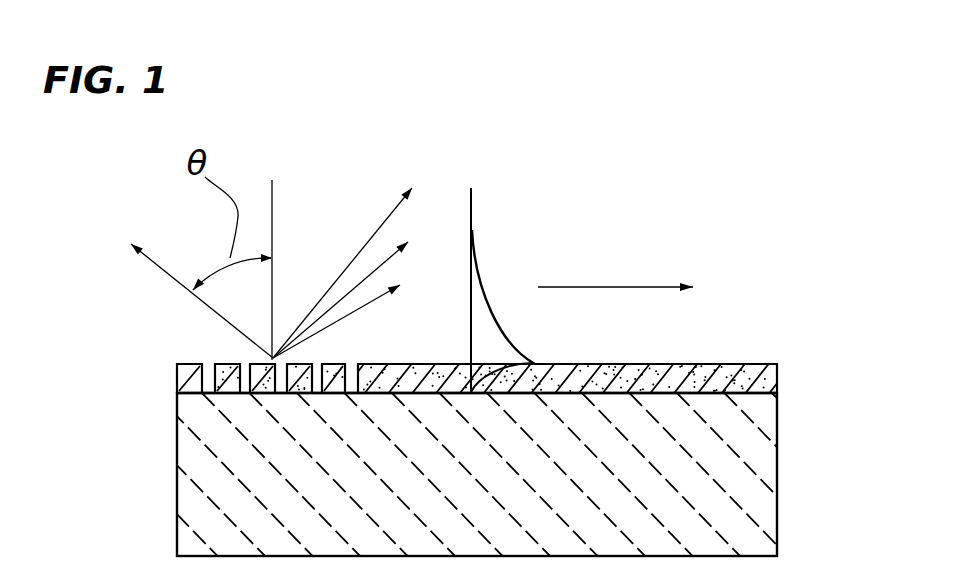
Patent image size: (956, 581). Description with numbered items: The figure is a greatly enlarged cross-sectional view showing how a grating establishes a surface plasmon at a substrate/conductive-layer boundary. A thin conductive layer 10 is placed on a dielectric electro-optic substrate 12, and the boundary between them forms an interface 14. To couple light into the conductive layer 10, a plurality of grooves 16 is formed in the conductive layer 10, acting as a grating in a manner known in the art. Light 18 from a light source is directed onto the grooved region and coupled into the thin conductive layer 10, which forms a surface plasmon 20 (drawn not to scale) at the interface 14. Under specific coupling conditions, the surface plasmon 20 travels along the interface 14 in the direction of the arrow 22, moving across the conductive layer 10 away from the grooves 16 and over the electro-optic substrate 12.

The conductive layer 10 is at (727, 381).
The electro-optic substrate 12 is at (710, 462).
The interface 14 is at (752, 397).
The grooves 16 is at (207, 370).
The light 18 is at (161, 266).
The surface plasmon 20 is at (472, 210).
The arrow 22 is at (613, 287).